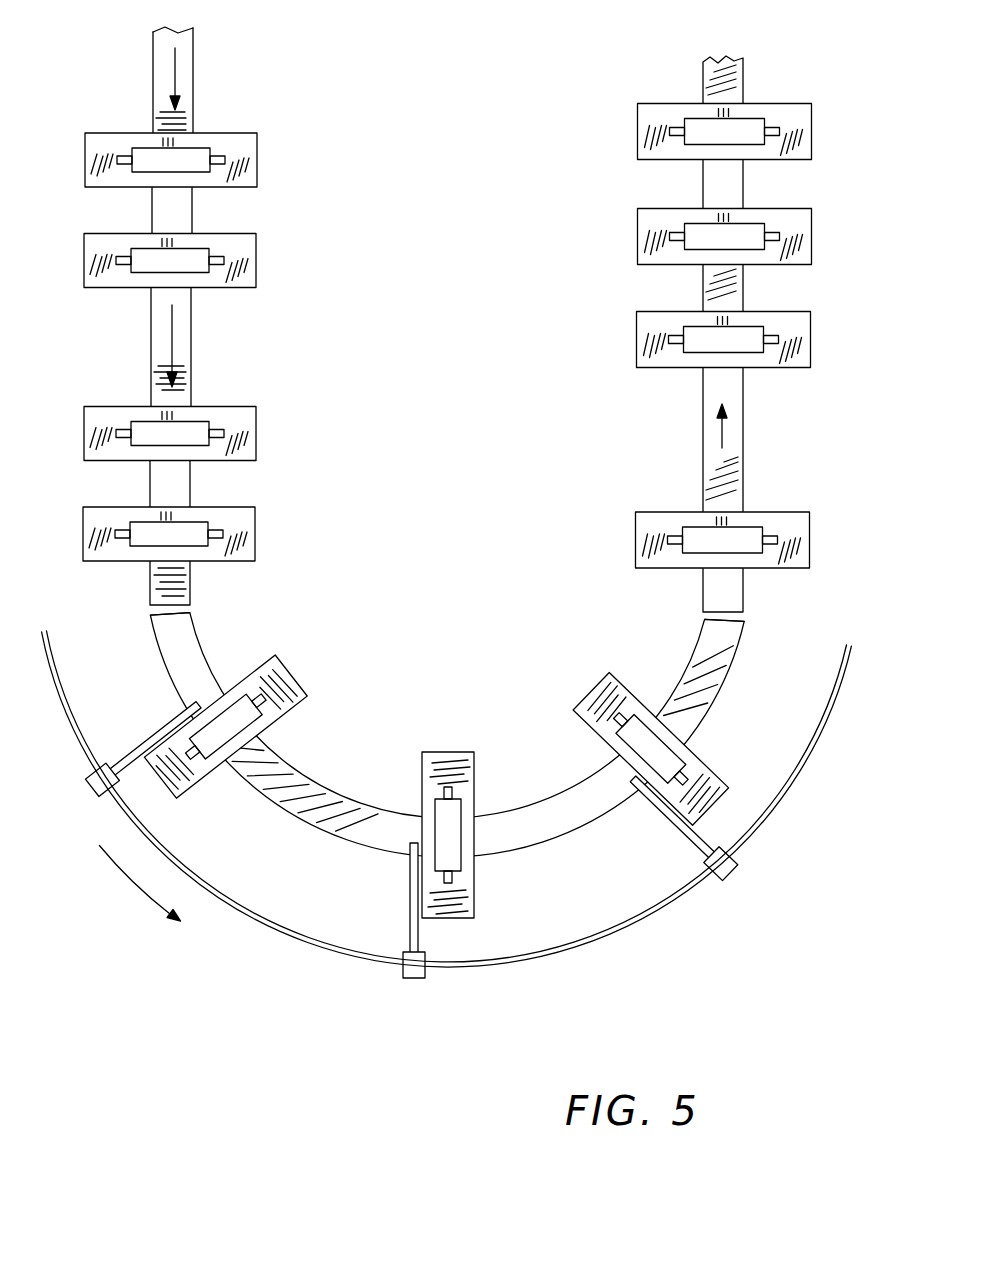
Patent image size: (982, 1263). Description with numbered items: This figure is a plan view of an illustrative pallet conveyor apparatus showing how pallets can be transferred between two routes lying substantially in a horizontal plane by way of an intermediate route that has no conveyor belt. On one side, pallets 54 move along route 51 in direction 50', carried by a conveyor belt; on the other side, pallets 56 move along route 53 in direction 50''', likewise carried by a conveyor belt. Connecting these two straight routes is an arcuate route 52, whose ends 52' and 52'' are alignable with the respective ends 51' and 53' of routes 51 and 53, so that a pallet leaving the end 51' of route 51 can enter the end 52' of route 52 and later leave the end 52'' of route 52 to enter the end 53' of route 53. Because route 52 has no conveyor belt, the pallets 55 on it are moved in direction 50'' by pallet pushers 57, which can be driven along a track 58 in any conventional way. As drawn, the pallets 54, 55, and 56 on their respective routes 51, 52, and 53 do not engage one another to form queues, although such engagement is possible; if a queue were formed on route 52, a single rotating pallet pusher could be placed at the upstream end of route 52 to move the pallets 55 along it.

The route 51 is at (203, 267).
The end of route 51 51' is at (200, 584).
The direction 50' is at (212, 347).
The pallets 54 is at (258, 160).
The route 53 is at (757, 277).
The end of route 53 53' is at (676, 589).
The direction 50''' is at (773, 452).
The pallets 56 is at (812, 137).
The arcuate route 52 is at (447, 735).
The end of route 52 52' is at (128, 610).
The end of route 52 52'' is at (761, 615).
The pallets 55 is at (300, 682).
The pallet pushers 57 is at (130, 760).
The track 58 is at (648, 922).
The direction 50'' is at (139, 893).